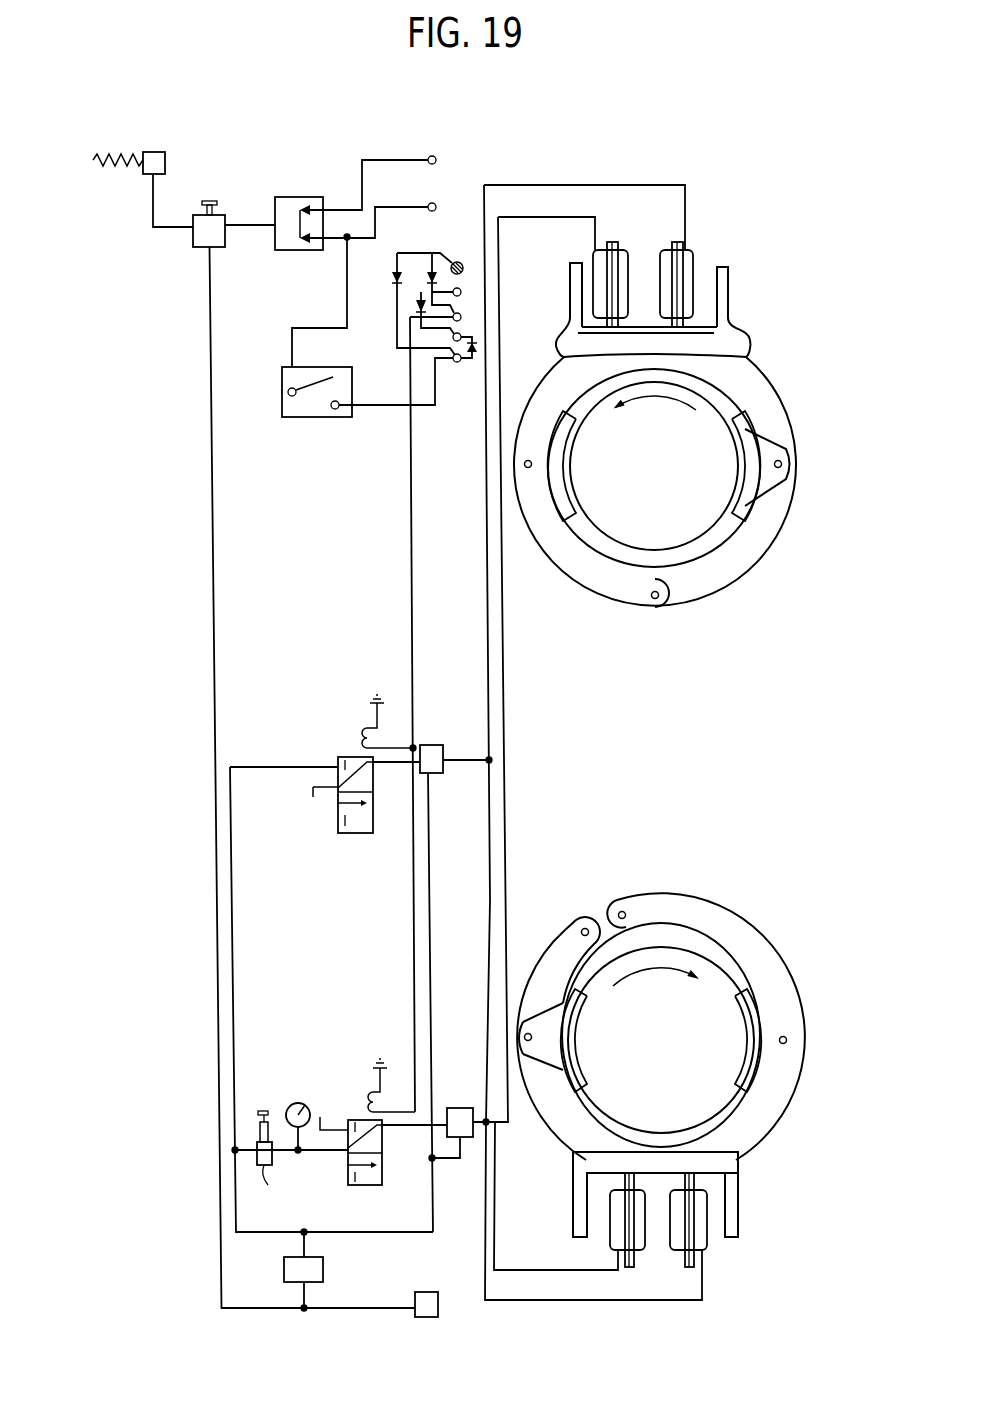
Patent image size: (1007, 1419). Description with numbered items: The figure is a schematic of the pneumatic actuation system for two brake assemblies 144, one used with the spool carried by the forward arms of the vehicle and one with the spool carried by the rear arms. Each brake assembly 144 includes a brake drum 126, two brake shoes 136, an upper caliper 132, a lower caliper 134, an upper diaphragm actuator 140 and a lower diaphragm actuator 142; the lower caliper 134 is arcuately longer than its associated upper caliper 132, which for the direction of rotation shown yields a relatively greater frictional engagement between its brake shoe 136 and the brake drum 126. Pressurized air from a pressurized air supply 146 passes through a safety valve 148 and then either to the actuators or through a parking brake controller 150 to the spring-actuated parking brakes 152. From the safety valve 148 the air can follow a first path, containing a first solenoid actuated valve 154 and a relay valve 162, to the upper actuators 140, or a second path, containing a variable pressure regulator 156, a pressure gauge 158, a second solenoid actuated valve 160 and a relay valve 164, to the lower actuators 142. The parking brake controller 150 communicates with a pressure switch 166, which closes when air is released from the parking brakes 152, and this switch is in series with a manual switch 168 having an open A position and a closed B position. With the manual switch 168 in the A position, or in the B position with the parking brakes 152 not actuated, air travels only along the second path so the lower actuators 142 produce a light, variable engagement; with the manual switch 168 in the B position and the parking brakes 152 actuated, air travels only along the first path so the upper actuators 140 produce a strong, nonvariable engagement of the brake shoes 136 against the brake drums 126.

The brake drum 126 is at (675, 507).
The upper caliper 132 is at (555, 558).
The lower caliper 134 is at (755, 550).
The brake shoe 136 is at (567, 463).
The upper diaphragm actuator 140 is at (631, 250).
The lower diaphragm actuator 142 is at (692, 264).
The brake assembly 144 is at (704, 612).
The pressurized air supply 146 is at (430, 1318).
The safety valve 148 is at (323, 1271).
The parking brake controller 150 is at (192, 238).
The parking brake 152 is at (165, 168).
The first solenoid actuated valve 154 is at (338, 816).
The variable pressure regulator 156 is at (265, 1168).
The pressure gauge 158 is at (298, 1102).
The second solenoid actuated valve 160 is at (373, 1186).
The relay valve 162 is at (433, 745).
The relay valve 164 is at (460, 1108).
The pressure switch 166 is at (293, 195).
The manual switch 168 is at (318, 408).